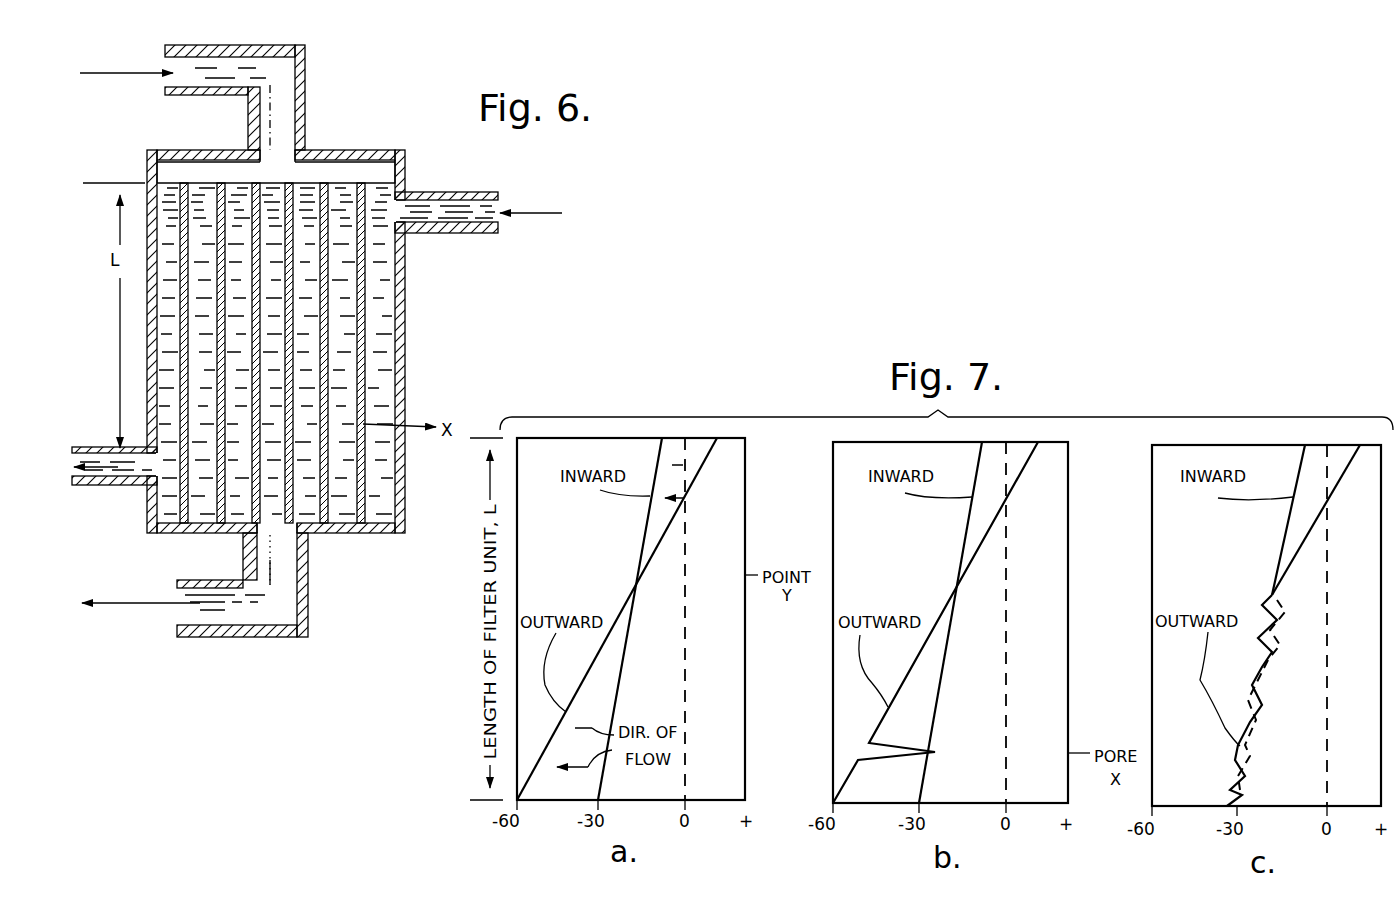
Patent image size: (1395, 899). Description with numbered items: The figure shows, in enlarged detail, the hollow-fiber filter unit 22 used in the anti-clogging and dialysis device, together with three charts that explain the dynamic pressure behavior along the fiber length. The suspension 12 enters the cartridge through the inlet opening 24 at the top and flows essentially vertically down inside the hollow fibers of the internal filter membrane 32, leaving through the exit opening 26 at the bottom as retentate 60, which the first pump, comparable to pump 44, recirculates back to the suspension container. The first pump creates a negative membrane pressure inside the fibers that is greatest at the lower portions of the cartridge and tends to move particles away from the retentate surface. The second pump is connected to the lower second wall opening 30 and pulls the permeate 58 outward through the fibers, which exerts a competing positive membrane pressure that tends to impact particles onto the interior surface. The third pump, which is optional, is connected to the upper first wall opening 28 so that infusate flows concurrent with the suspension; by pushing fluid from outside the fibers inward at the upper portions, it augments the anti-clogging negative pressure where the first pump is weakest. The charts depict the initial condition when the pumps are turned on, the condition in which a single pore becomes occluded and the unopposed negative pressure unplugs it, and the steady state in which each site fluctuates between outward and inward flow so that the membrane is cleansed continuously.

The suspension 12 is at (101, 76).
The filter unit 22 is at (368, 168).
The inlet opening 24 is at (214, 97).
The exit opening 26 is at (305, 565).
The first wall opening 28 is at (452, 191).
The second wall opening 30 is at (143, 483).
The internal filter membrane 32 is at (182, 358).
The pump 44 is at (522, 212).
The permeate 58 is at (63, 466).
The retentate 60 is at (165, 605).